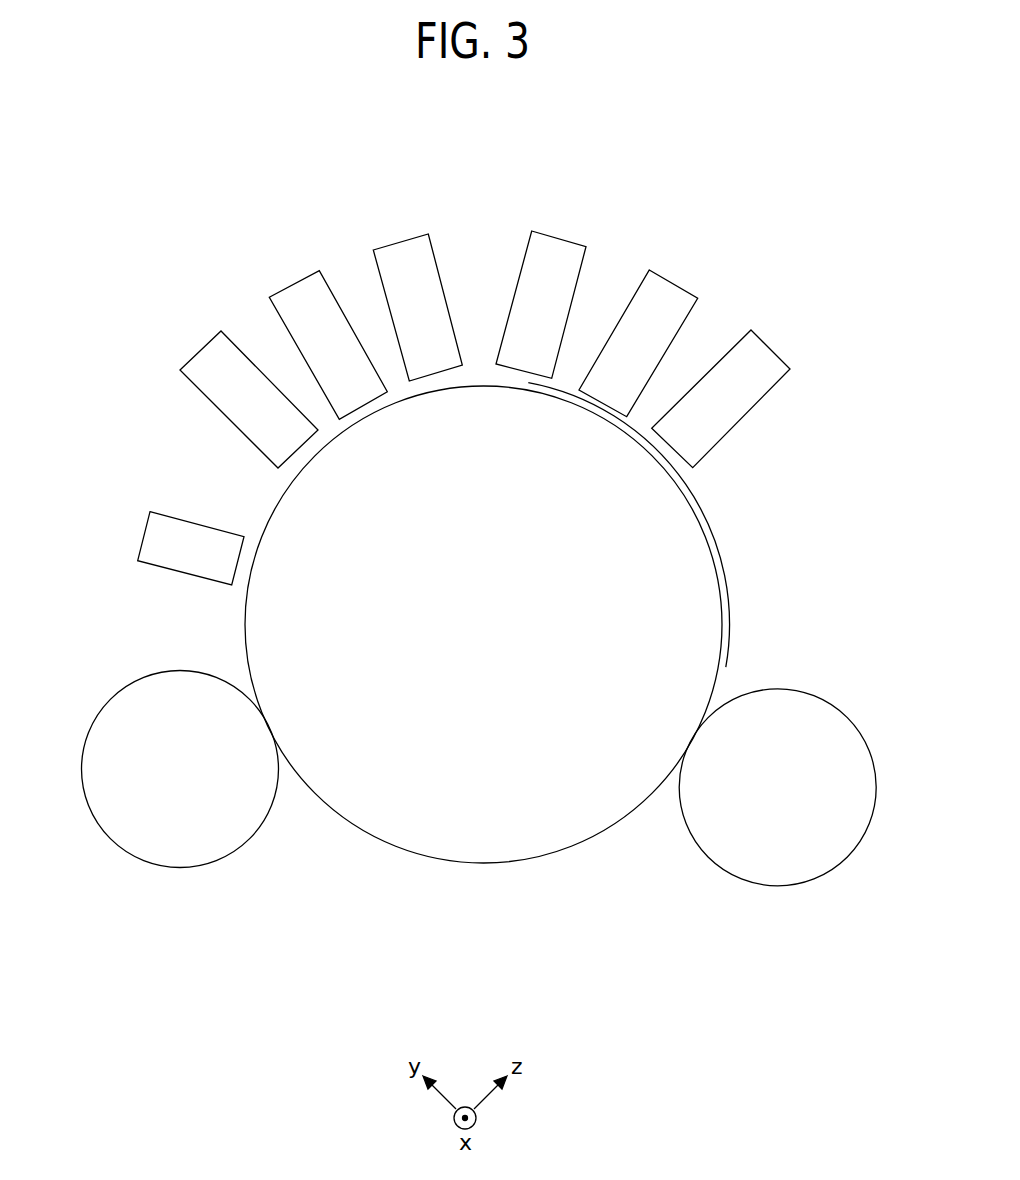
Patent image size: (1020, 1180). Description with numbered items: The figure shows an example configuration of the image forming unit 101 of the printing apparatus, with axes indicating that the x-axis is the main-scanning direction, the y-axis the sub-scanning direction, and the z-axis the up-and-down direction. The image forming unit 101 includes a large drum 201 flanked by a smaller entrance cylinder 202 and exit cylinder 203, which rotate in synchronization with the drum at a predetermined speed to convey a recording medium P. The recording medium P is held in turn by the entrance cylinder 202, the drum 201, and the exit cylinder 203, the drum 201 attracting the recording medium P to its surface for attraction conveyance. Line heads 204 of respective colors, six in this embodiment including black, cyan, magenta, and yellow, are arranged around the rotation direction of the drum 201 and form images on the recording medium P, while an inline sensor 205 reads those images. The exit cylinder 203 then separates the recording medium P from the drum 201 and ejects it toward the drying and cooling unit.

The image forming unit 101 is at (760, 153).
The drum 201 is at (483, 864).
The entrance cylinder 202 is at (776, 887).
The exit cylinder 203 is at (182, 869).
The line heads 204 is at (807, 232).
The inline sensor 205 is at (141, 541).
The recording medium P is at (729, 569).